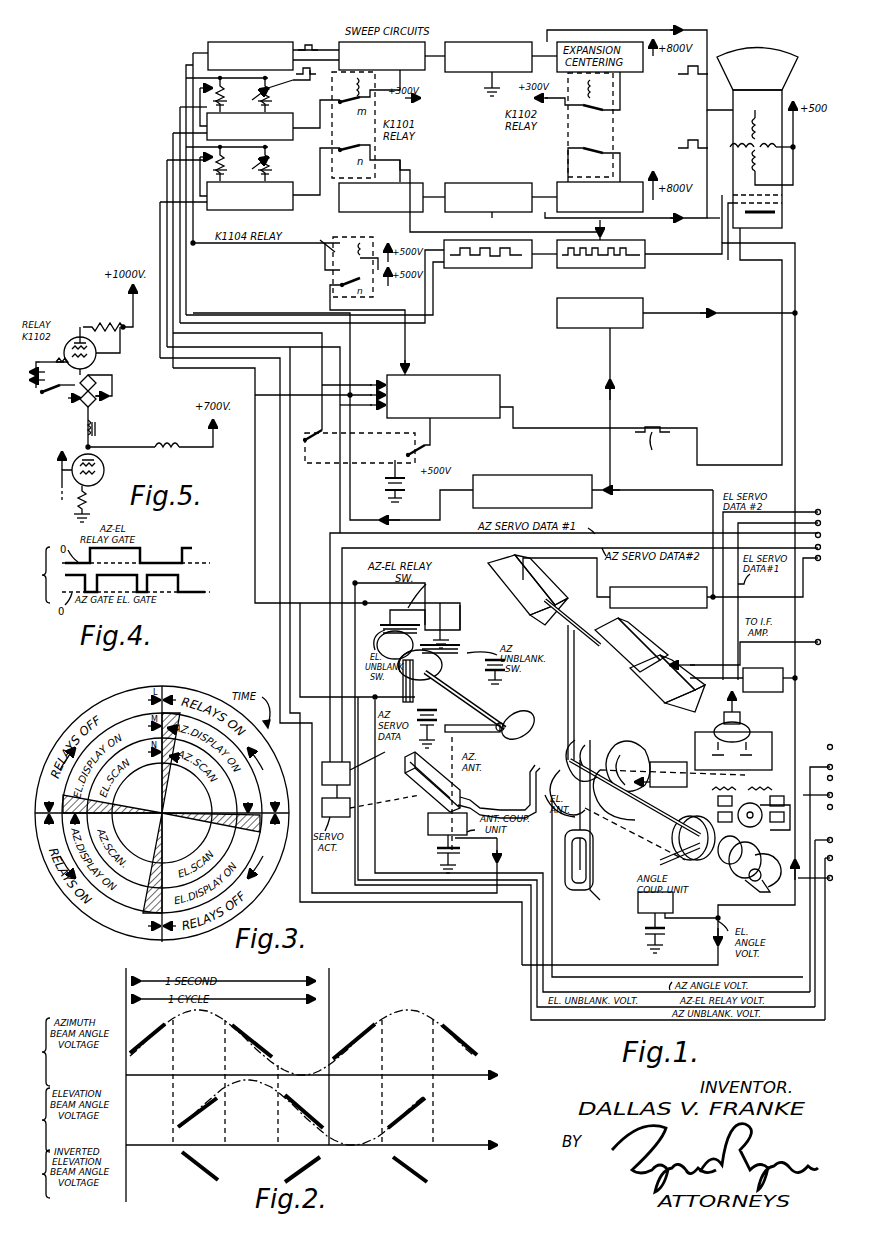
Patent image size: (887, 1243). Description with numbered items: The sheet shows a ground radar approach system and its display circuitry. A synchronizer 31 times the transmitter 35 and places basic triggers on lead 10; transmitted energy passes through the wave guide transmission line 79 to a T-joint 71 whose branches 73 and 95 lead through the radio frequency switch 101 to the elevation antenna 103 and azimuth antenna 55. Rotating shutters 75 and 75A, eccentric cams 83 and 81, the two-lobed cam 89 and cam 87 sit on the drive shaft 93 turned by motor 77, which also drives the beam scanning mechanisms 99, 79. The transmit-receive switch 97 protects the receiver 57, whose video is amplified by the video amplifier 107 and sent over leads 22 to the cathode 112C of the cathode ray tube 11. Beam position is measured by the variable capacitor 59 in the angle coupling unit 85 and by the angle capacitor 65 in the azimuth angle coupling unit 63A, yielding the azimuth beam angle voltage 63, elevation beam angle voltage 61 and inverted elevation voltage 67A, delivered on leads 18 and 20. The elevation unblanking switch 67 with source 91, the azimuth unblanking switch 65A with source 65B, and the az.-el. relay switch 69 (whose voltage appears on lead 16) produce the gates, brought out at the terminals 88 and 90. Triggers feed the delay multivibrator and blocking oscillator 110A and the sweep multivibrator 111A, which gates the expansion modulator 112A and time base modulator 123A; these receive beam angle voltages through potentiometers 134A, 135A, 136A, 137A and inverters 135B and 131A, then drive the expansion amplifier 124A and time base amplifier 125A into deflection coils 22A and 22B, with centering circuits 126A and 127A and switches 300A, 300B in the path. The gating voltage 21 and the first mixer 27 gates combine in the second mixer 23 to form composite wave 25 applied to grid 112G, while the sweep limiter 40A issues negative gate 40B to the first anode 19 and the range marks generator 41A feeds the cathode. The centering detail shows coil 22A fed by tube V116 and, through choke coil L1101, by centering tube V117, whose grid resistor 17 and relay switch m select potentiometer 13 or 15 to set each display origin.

In FIG. 1, the cathode ray tube 11 is at (795, 57).
In FIG. 1, the first anode 19 is at (782, 193).
In FIG. 1, the grid 112G is at (782, 205).
In FIG. 1, the cathode 112C is at (772, 214).
In FIG. 1, the expansion deflection coil 22A is at (760, 172).
In FIG. 5, the expansion deflection coil 22A is at (170, 425).
In FIG. 1, the time base deflection coil 22B is at (727, 140).
In FIG. 1, the normal video leads 22 is at (795, 470).
In FIG. 1, the sweep multivibrator 111A is at (250, 42).
In FIG. 1, the expansion modulator 112A is at (340, 42).
In FIG. 1, the expansion amplifier 124A is at (498, 42).
In FIG. 1, the expansion centering circuit 126A is at (643, 65).
In FIG. 1, the time base amplifier 125A is at (490, 183).
In FIG. 1, the time base centering circuit 127A is at (643, 203).
In FIG. 1, the time base modulator 123A is at (396, 183).
In FIG. 1, the positive-going gating voltage 21 is at (291, 75).
In FIG. 1, the inverter 131A is at (186, 132).
In FIG. 1, the inverter 135B is at (186, 202).
In FIG. 1, the potentiometer 137A is at (239, 95).
In FIG. 1, the potentiometer 136A is at (282, 95).
In FIG. 1, the potentiometer resistance 135A is at (239, 164).
In FIG. 1, the potentiometer resistance 134A is at (282, 164).
In FIG. 1, the first mixer stage 27 is at (444, 262).
In FIG. 1, the second mixer stage 23 is at (645, 265).
In FIG. 1, the composite wave 25 is at (620, 248).
In FIG. 1, the range marks generator 41A is at (633, 328).
In FIG. 1, the pattern clipper or sweep limiter 40A is at (500, 386).
In FIG. 1, the negative-going gating voltage 40B is at (652, 450).
In FIG. 1, the switch 300A is at (310, 425).
In FIG. 1, the switch 300B is at (428, 440).
In FIG. 1, the delay multivibrator and blocking oscillator stage 110A is at (565, 475).
In FIG. 1, the trigger lead 10 is at (695, 495).
In FIG. 1, the transmitter 35 is at (540, 578).
In FIG. 1, the synchronizer 31 is at (670, 585).
In FIG. 1, the transmit-receive switch 97 is at (635, 625).
In FIG. 1, the receiver 57 is at (675, 703).
In FIG. 1, the video amplifier stage 107 is at (780, 692).
In FIG. 1, the eccentric cam 83 is at (690, 795).
In FIG. 1, the antenna beam scanning mechanism 99 is at (665, 830).
In FIG. 1, the transmission line branch 73 is at (665, 825).
In FIG. 1, the motor 77 is at (745, 895).
In FIG. 1, the angle coupling unit 85 is at (673, 903).
In FIG. 1, the variable capacitor 59 is at (670, 932).
In FIG. 1, the terminal 88 is at (825, 765).
In FIG. 1, the terminal 90 is at (547, 1034).
In FIG. 1, the azimuth angle coupling voltage lead 18 is at (827, 832).
In FIG. 1, the elevation angle coupling voltage lead 20 is at (827, 851).
In FIG. 1, the az.-el. relay voltage lead 16 is at (829, 883).
In FIG. 1, the az.-el. relay switch 69 is at (390, 622).
In FIG. 1, the cam 87 is at (378, 640).
In FIG. 1, the azimuth unblanking switch 65A is at (440, 655).
In FIG. 1, the continuous voltage source 65B is at (505, 665).
In FIG. 1, the two-lobed cam 89 is at (440, 670).
In FIG. 1, the elevation unblanking switch 67 is at (415, 700).
In FIG. 1, the continuous voltage source 91 is at (440, 712).
In FIG. 1, the drive shaft 93 is at (500, 700).
In FIG. 1, the eccentric cam 81 is at (530, 715).
In FIG. 1, the wave guide transmission line 79 is at (452, 738).
In FIG. 1, the azimuth antenna 55 is at (400, 762).
In FIG. 1, the transmission line branch 95 is at (530, 770).
In FIG. 1, the T-joint 71 is at (575, 790).
In FIG. 1, the azimuth angle coupling unit 63A is at (428, 826).
In FIG. 1, the angle capacitor 65 is at (462, 852).
In FIG. 1, the rotating shutter 75 is at (588, 732).
In FIG. 1, the radio frequency switch 101 is at (608, 730).
In FIG. 1, the rotating shutter 75A is at (648, 733).
In FIG. 1, the elevation antenna 103 is at (590, 890).
In FIG. 2, the azimuth beam angle voltage 63 is at (150, 1038).
In FIG. 2, the elevation beam angle voltage 61 is at (200, 1112).
In FIG. 2, the inverted elevation beam angle voltage 67A is at (198, 1165).
In FIG. 5, the grid resistor 17 is at (57, 345).
In FIG. 5, the centering tube V117 is at (96, 355).
In FIG. 5, the relay switch m is at (55, 398).
In FIG. 5, the potentiometer 13 is at (78, 405).
In FIG. 5, the potentiometer 15 is at (100, 412).
In FIG. 5, the choke coil L1101 is at (84, 430).
In FIG. 5, the final stage tube of expansion amplifier V116 is at (104, 465).